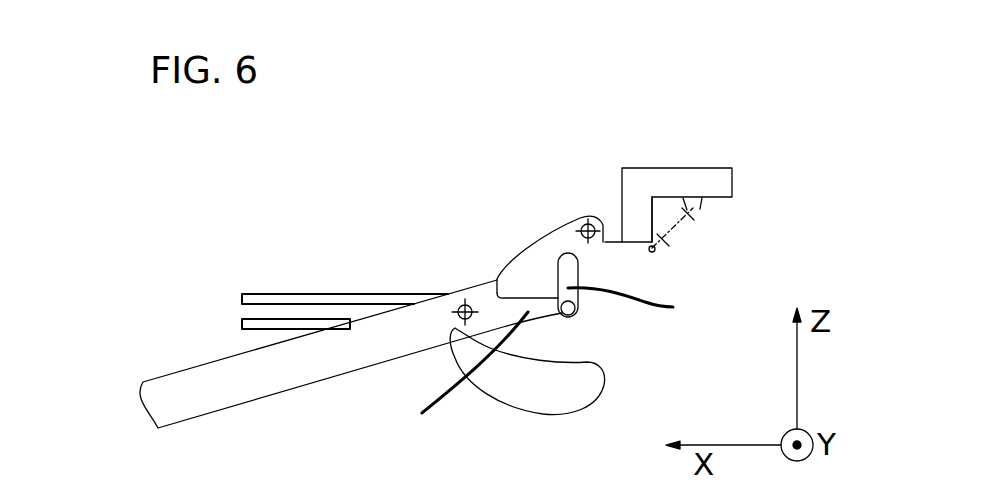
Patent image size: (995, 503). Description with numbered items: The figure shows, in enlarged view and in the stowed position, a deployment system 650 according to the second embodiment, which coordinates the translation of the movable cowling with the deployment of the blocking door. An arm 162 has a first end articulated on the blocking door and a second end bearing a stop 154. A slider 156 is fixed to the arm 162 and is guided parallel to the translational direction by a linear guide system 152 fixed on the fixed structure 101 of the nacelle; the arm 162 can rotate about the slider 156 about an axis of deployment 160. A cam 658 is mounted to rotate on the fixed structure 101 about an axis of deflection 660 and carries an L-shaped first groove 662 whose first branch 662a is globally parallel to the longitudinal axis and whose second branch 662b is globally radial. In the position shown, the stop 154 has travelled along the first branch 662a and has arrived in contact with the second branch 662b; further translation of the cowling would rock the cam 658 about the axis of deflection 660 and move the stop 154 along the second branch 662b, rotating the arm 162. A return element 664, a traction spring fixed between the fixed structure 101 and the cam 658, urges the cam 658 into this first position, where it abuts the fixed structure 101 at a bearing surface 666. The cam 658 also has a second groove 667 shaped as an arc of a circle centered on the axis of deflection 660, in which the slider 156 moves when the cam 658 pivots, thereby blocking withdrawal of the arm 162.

The fixed structure 101 is at (713, 181).
The linear guide system 152 is at (272, 308).
The stop 154 is at (575, 308).
The slider 156 is at (459, 310).
The axis of deployment 160 is at (471, 310).
The arm 162 is at (218, 374).
The deployment system 650 is at (650, 102).
The cam 658 is at (528, 262).
The axis of deflection 660 is at (584, 214).
The first groove 662 is at (577, 279).
The first branch 662a is at (434, 388).
The second branch 662b is at (663, 316).
The return element 664 is at (688, 232).
The bearing surface 666 is at (632, 242).
The second groove 667 is at (517, 367).